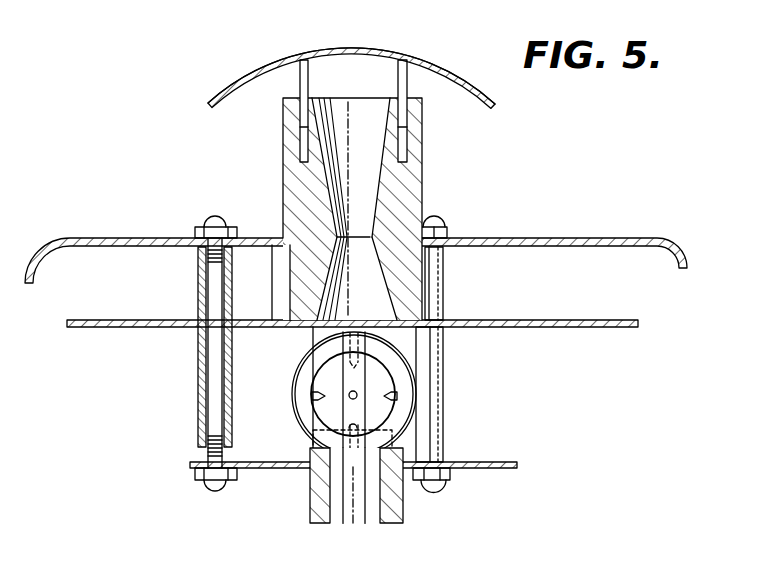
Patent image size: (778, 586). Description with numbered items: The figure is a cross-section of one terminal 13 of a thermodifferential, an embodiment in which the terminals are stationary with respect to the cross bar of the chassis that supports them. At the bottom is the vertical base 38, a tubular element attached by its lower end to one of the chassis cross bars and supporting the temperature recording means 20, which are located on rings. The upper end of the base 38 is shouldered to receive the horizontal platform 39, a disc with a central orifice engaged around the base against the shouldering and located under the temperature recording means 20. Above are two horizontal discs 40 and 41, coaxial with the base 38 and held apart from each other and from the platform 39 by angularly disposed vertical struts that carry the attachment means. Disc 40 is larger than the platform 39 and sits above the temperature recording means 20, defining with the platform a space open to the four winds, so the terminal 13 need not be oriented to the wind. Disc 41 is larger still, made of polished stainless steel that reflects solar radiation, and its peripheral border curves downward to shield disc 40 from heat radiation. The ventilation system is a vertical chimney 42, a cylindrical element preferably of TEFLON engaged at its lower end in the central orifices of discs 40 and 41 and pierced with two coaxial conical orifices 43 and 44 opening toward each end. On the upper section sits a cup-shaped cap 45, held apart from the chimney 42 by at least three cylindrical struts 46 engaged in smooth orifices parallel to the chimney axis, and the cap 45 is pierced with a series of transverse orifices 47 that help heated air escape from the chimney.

The terminal 13 is at (160, 378).
The temperature recording means 20 is at (317, 385).
The vertical base 38 is at (317, 500).
The horizontal platform 39 is at (267, 461).
The disc 40 is at (155, 329).
The disc 41 is at (130, 238).
The vertical chimney 42 is at (415, 157).
The conical orifice 43 is at (359, 113).
The conical orifice 44 is at (373, 295).
The cap 45 is at (223, 90).
The cylindrical struts 46 is at (299, 80).
The transverse orifices 47 is at (251, 75).